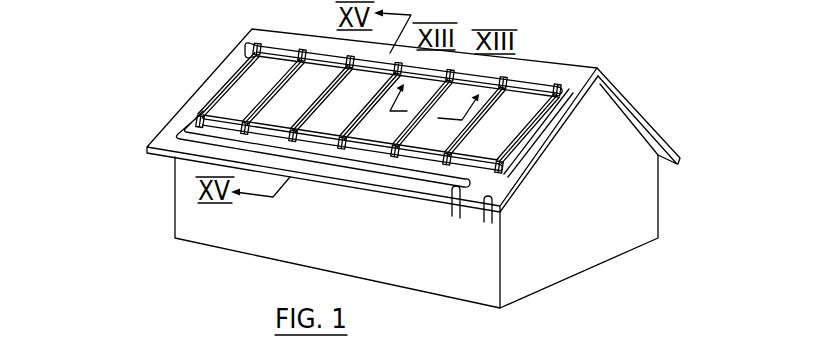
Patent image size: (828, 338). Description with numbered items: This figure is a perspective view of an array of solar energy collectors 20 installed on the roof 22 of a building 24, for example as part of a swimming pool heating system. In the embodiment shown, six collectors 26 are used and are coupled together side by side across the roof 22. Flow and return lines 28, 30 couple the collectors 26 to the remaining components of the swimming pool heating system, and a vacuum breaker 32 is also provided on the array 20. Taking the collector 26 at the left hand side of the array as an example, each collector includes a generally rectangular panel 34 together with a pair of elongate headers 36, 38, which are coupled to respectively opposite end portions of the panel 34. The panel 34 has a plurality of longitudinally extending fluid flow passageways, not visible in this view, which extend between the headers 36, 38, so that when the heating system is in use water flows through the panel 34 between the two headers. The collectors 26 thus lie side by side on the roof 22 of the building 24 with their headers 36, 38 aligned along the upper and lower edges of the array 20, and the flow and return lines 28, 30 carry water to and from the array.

The array of solar energy collectors 20 is at (527, 72).
The roof 22 is at (583, 70).
The building 24 is at (665, 211).
The collectors 26 is at (349, 92).
The flow line 28 is at (418, 181).
The return line 30 is at (515, 188).
The vacuum breaker 32 is at (244, 45).
The panel 34 is at (247, 89).
The header 36 is at (283, 50).
The header 38 is at (214, 116).